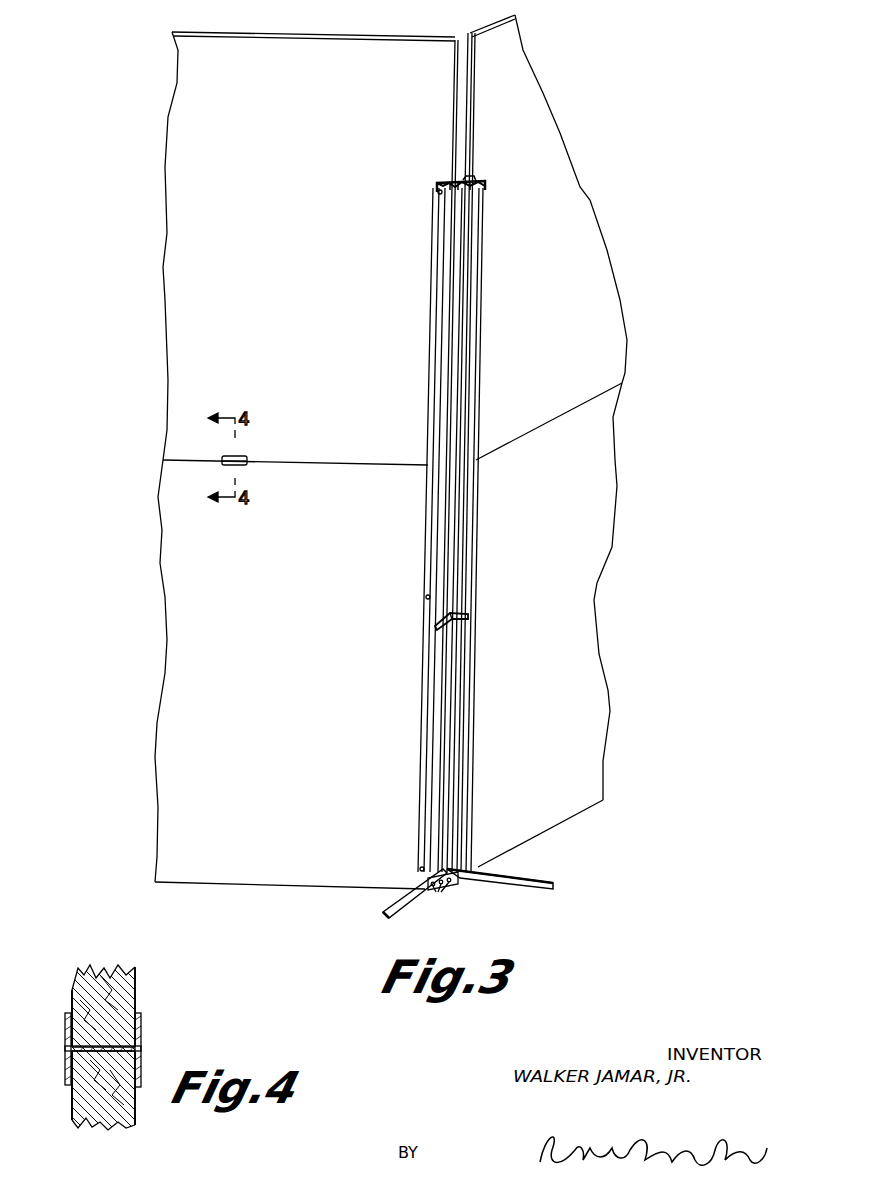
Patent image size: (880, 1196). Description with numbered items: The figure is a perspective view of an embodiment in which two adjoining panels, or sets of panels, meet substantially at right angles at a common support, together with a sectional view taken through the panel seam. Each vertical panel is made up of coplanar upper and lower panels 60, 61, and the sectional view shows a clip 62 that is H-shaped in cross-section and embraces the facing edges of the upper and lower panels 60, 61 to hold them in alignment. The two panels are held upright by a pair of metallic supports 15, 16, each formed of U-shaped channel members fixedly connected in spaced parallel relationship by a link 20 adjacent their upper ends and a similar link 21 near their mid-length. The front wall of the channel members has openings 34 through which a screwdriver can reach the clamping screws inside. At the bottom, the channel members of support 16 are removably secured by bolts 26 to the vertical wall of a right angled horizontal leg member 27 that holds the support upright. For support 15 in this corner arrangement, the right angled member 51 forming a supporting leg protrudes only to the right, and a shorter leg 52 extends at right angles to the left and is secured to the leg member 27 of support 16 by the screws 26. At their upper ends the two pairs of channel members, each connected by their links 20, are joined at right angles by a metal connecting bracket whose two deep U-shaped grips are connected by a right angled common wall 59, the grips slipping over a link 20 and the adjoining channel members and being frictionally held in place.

In FIG. 3, the metallic support 15 is at (468, 707).
In FIG. 3, the metallic support 16 is at (418, 699).
In FIG. 3, the link 20 is at (445, 184).
In FIG. 3, the link 21 is at (434, 626).
In FIG. 3, the bolts 26 is at (440, 888).
In FIG. 3, the right angled horizontal leg member 27 is at (392, 917).
In FIG. 3, the openings 34 is at (440, 195).
In FIG. 3, the right angled member 51 is at (523, 890).
In FIG. 3, the shorter leg 52 is at (434, 893).
In FIG. 3, the right angled common wall 59 is at (470, 182).
In FIG. 3, the upper panel 60 is at (291, 257).
In FIG. 4, the upper panel 60 is at (73, 988).
In FIG. 3, the lower panel 61 is at (296, 597).
In FIG. 4, the lower panel 61 is at (73, 1107).
In FIG. 3, the clip 62 is at (244, 458).
In FIG. 4, the clip 62 is at (140, 1040).